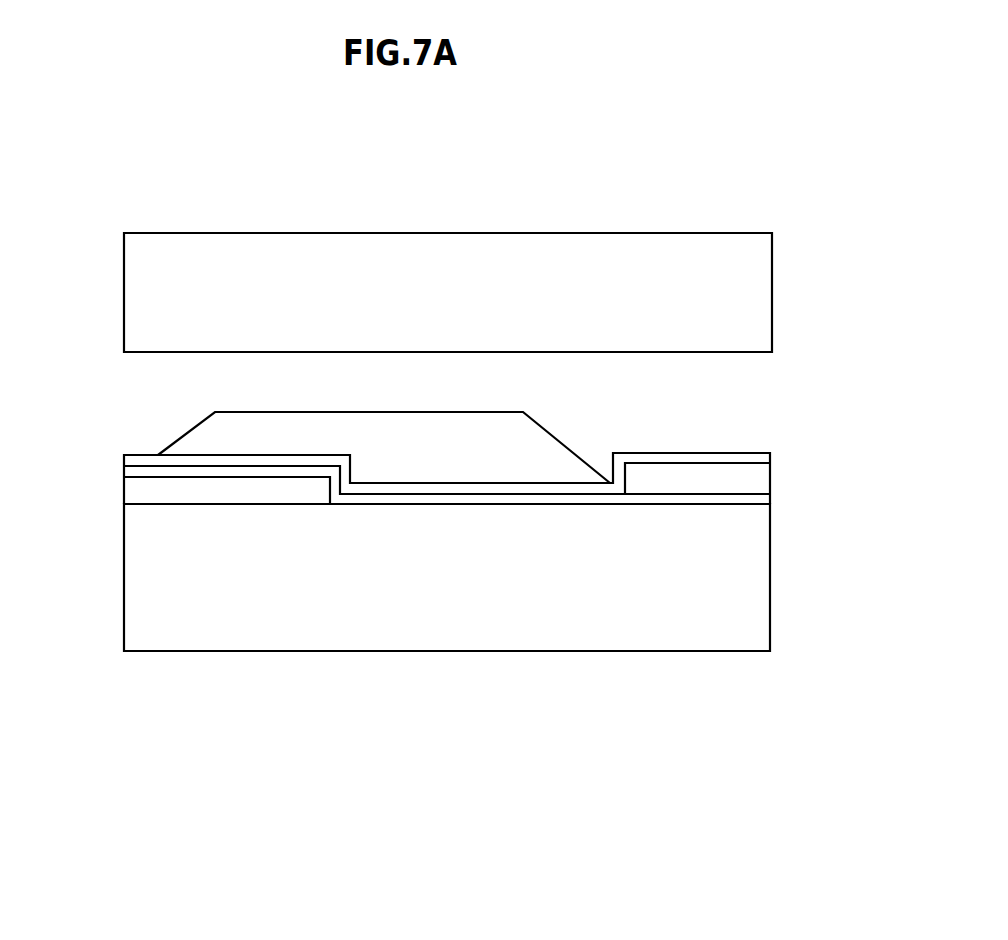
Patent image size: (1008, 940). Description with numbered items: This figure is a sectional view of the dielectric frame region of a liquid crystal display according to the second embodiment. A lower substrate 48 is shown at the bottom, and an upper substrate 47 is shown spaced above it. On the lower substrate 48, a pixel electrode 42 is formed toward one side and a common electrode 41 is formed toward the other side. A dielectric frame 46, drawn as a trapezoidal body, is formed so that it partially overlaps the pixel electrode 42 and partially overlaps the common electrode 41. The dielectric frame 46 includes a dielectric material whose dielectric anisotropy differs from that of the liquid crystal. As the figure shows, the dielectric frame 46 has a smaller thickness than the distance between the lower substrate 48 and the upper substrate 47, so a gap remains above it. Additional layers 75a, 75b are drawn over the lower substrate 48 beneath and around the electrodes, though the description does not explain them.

The upper substrate 47 is at (431, 250).
The lower substrate 48 is at (613, 610).
The pixel electrode 42 is at (205, 493).
The dielectric frame 46 is at (227, 451).
The common electrode 41 is at (705, 478).
The first layer 75a is at (718, 502).
The second layer 75b is at (747, 457).